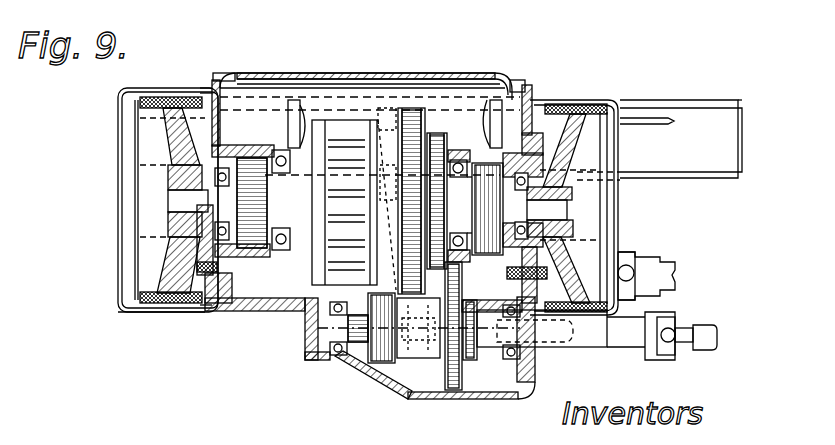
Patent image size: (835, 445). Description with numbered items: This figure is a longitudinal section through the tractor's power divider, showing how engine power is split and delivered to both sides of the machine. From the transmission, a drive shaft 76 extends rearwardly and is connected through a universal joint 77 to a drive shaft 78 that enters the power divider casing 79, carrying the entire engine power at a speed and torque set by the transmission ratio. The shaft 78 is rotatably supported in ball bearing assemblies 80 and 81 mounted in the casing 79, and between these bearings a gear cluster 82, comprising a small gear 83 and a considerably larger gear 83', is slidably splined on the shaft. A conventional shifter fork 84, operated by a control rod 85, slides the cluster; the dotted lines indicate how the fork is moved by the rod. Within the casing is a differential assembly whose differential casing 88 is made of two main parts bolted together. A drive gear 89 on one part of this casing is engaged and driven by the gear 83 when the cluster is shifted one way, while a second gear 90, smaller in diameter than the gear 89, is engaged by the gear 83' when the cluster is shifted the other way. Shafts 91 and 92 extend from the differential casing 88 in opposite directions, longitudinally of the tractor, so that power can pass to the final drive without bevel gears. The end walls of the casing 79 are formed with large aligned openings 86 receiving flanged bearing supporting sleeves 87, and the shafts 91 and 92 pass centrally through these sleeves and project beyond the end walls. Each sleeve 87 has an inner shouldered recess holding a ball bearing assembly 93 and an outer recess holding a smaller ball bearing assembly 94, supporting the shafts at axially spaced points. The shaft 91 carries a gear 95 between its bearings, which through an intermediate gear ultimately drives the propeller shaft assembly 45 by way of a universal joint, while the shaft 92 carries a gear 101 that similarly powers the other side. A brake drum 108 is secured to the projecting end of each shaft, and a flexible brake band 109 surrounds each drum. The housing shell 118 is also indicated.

The propeller shaft assembly 45 is at (663, 265).
The drive shaft 76 is at (716, 332).
The universal joint 77 is at (662, 361).
The drive shaft 78 is at (581, 348).
The power divider casing 79 is at (288, 312).
The ball bearing assembly 80 is at (532, 376).
The ball bearing assembly 81 is at (337, 353).
The gear cluster 82 is at (407, 348).
The small gear 83 is at (419, 356).
The larger gear 83' is at (441, 348).
The shifter fork 84 is at (495, 372).
The control rod 85 is at (674, 121).
The openings 86 is at (222, 146).
The bearing supporting sleeve 87 is at (284, 145).
The differential casing 88 is at (267, 306).
The drive gear 89 is at (416, 108).
The second gear 90 is at (443, 133).
The differential shaft 91 is at (178, 199).
The differential shaft 92 is at (566, 207).
The ball bearing assembly 93 is at (495, 206).
The ball bearing assembly 94 is at (222, 170).
The gear 95 is at (286, 166).
The gear 101 is at (527, 110).
The brake drum 108 is at (147, 133).
The brake band 109 is at (140, 102).
The housing shell 118 is at (350, 73).